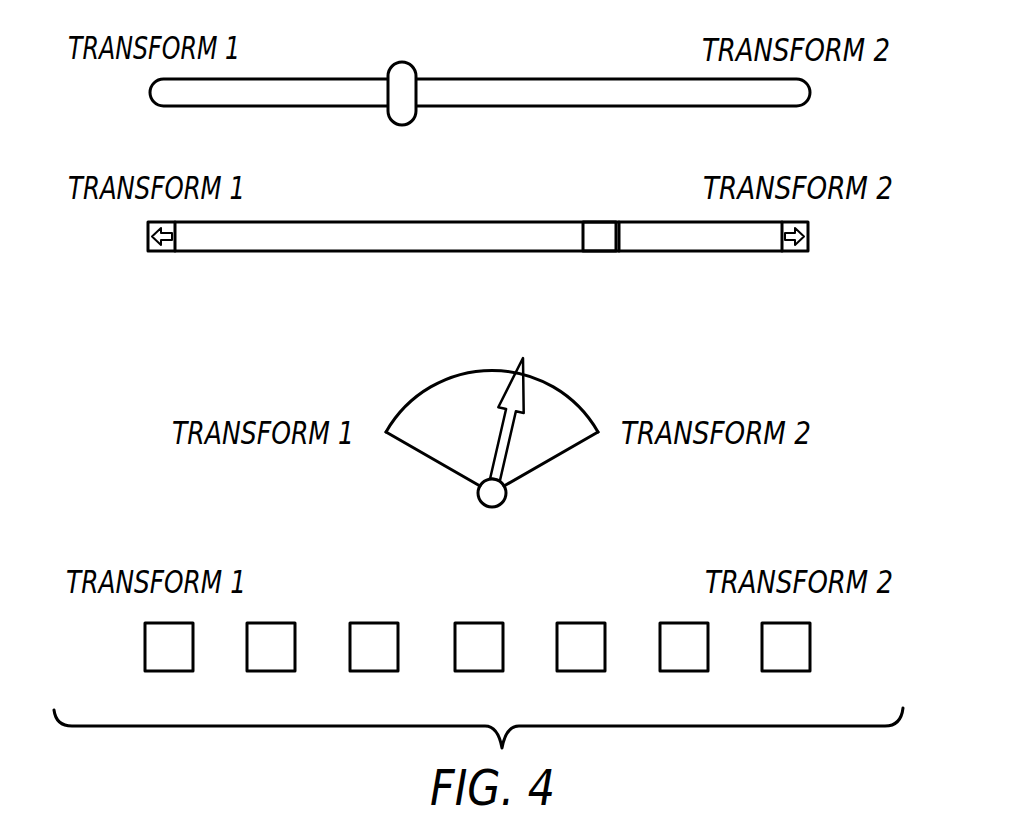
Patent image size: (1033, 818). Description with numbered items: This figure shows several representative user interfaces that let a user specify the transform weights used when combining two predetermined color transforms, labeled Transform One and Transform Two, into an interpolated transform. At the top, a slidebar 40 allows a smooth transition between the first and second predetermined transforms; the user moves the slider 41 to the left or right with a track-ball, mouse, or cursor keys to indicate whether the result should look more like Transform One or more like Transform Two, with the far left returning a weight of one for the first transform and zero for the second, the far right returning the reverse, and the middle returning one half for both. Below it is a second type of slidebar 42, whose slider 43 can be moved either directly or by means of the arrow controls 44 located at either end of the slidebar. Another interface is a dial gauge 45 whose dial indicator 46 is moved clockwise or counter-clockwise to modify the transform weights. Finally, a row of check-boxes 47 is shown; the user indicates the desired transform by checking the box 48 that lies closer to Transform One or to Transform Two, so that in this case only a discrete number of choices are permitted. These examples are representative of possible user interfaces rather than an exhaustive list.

The slidebar 40 is at (297, 83).
The slider 41 is at (405, 73).
The second type of slidebar 42 is at (420, 222).
The slider 43 is at (598, 228).
The arrow controls 44 is at (811, 234).
The dial gauge 45 is at (432, 390).
The dial indicator 46 is at (525, 363).
The check-boxes 47 is at (378, 622).
The box 48 is at (590, 622).